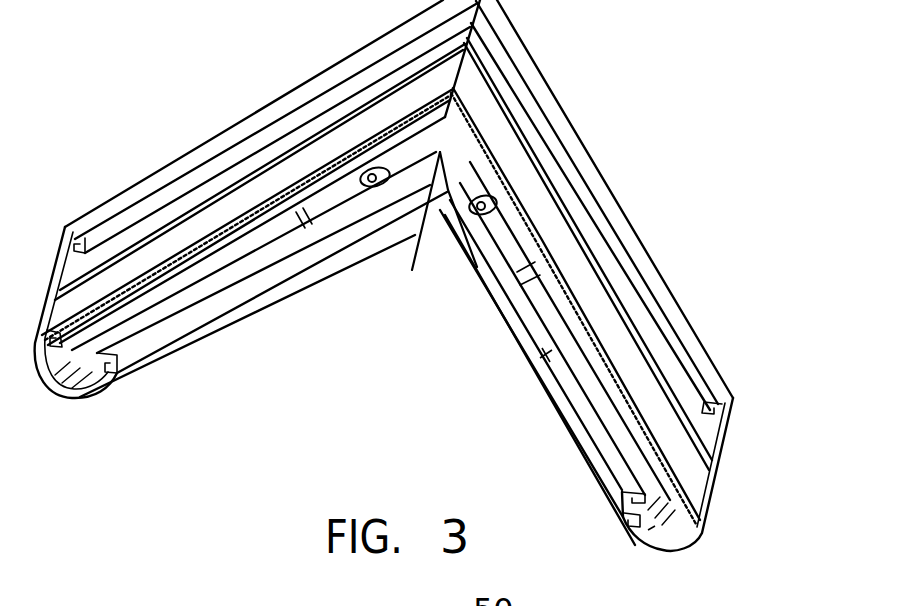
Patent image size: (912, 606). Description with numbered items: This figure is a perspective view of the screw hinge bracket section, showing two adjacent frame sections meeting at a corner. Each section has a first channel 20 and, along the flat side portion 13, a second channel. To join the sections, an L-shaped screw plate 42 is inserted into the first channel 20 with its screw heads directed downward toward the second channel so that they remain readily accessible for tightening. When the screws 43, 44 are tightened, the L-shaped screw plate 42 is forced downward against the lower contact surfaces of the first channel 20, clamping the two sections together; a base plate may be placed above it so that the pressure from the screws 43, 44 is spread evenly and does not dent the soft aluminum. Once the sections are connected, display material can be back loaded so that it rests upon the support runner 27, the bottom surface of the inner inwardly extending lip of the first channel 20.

The flat side portion 13 is at (600, 158).
The first channel 20 is at (655, 526).
The bottom surface of inner inwardly extending lip 27 is at (548, 352).
The L-shaped screw plate 42 is at (416, 250).
The screw 43 is at (373, 188).
The screw 44 is at (474, 214).